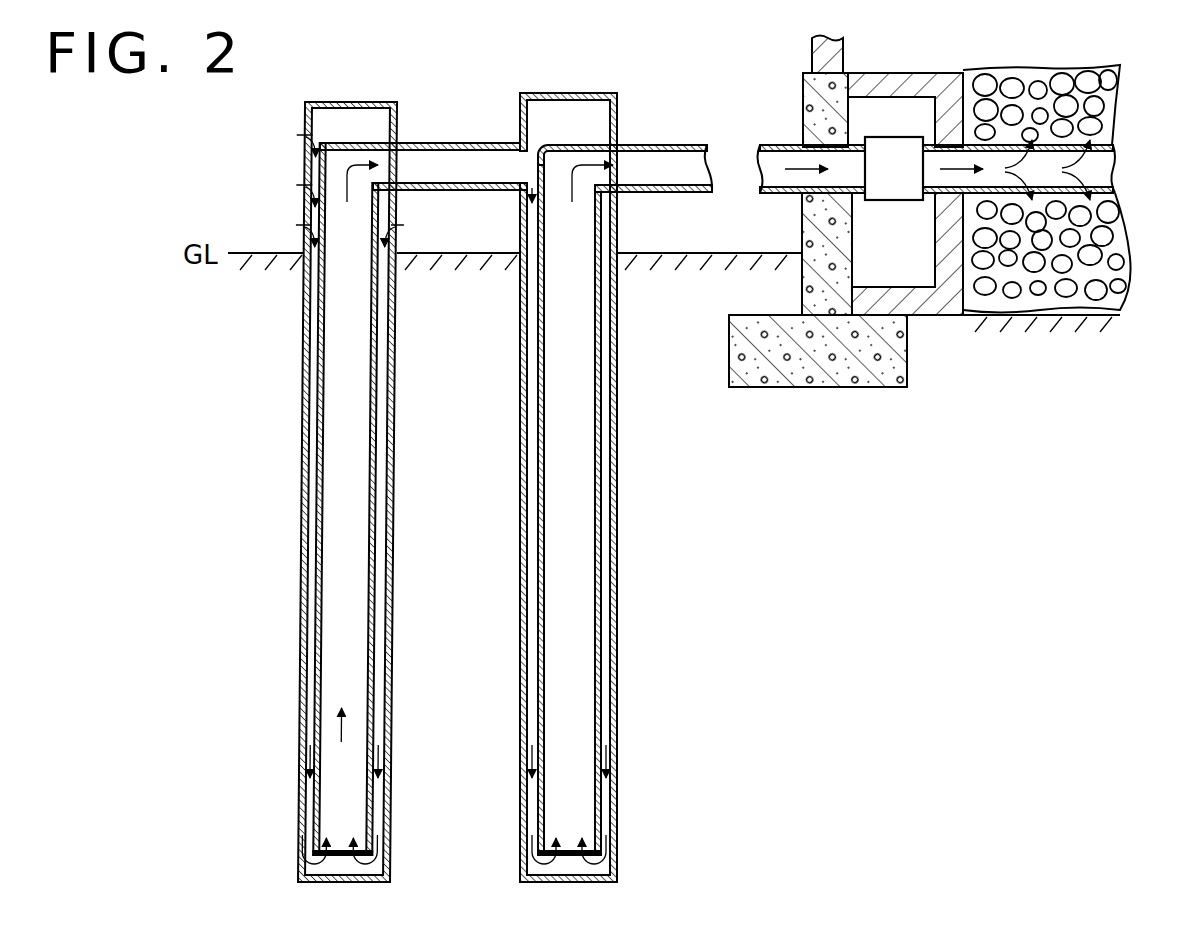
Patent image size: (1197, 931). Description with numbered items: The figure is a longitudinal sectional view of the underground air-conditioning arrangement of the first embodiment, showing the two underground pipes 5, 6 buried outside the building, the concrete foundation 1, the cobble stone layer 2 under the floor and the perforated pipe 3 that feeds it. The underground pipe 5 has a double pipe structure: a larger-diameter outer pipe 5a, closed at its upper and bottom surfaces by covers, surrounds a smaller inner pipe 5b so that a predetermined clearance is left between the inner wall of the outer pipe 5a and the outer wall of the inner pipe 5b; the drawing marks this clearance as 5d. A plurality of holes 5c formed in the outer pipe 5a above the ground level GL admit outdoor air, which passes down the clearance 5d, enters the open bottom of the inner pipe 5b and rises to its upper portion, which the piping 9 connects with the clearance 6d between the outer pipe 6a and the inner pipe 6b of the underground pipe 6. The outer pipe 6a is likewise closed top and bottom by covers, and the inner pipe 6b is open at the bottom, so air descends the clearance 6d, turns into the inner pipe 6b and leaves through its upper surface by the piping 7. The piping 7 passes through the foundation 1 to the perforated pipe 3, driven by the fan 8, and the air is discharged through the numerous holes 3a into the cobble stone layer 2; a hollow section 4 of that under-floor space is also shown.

The foundation 1 is at (802, 100).
The cobble stone layer 2 is at (1100, 110).
The perforated pipe 3 is at (1113, 140).
The holes 3a is at (1113, 173).
The hollow section 4 is at (918, 280).
The underground pipe 5 is at (383, 97).
The outer pipe 5a is at (303, 363).
The inner pipe 5b is at (378, 362).
The holes 5c is at (299, 143).
The annular passage 5d is at (313, 304).
The underground pipe 6 is at (609, 92).
The outer pipe 6a is at (522, 462).
The inner pipe 6b is at (598, 461).
The annular passage 6d is at (530, 310).
The piping 7 is at (683, 159).
The fan 8 is at (887, 200).
The piping 9 is at (462, 143).